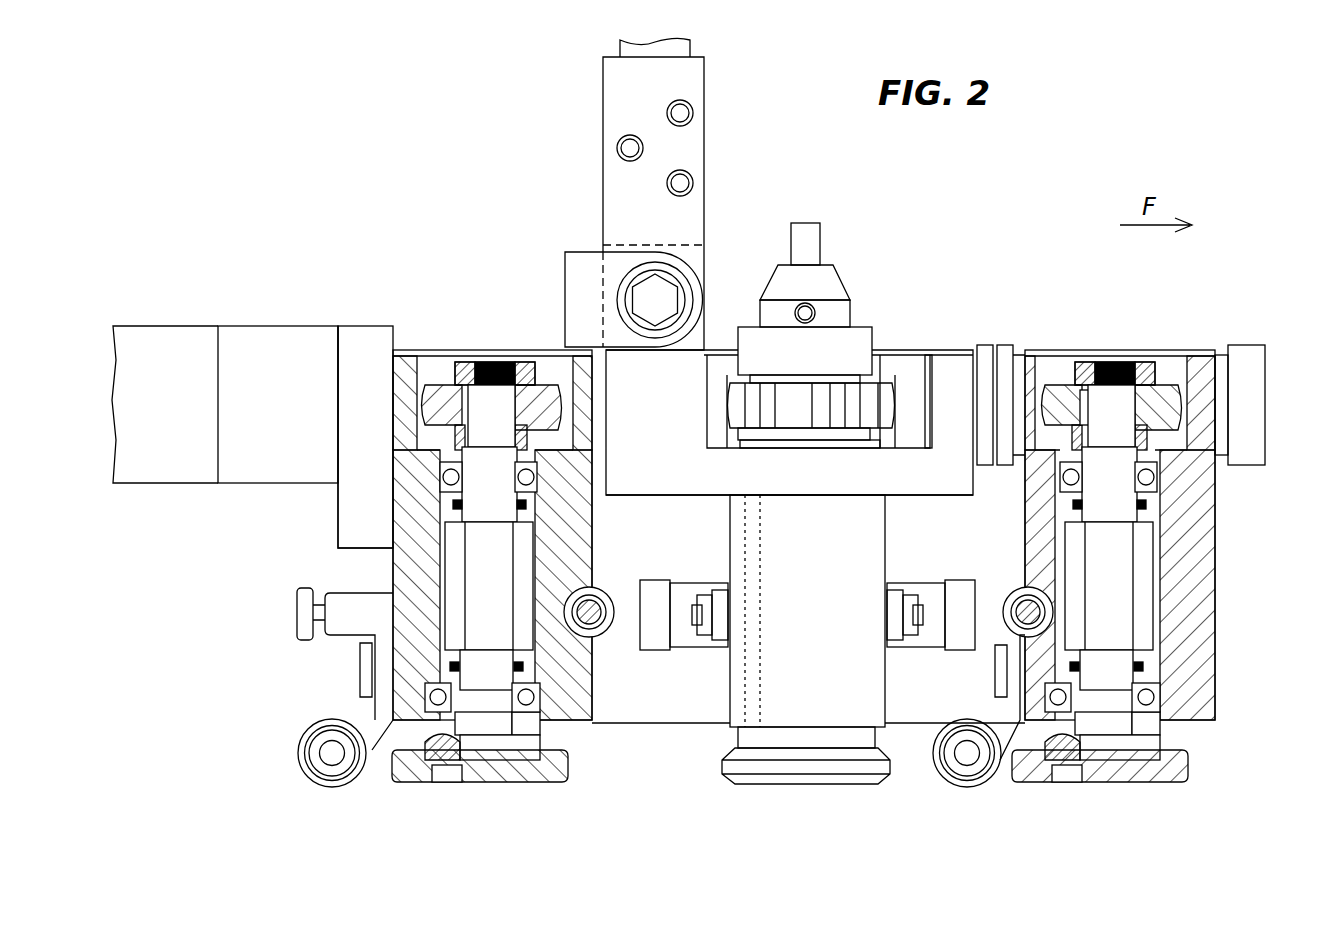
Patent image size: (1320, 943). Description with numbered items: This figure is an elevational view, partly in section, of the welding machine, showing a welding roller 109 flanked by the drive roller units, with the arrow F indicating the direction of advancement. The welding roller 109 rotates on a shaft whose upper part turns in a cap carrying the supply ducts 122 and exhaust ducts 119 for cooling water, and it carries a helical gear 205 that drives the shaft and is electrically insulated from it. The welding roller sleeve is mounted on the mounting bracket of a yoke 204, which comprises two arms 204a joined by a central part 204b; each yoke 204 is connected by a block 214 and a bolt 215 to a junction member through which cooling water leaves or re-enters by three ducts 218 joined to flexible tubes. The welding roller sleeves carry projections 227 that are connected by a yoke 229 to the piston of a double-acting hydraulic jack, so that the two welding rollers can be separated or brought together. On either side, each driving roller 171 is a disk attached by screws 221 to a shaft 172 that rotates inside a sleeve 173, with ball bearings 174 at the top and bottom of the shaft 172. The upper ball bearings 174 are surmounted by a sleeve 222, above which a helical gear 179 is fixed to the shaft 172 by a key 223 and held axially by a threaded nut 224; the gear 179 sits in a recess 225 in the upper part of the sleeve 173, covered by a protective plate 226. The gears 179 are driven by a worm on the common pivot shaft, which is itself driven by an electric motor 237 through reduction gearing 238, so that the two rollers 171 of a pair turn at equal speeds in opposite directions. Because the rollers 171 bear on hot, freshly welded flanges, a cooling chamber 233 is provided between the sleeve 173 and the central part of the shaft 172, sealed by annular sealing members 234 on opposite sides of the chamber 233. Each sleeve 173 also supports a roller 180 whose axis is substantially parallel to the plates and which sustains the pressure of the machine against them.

The serrated roller 109 is at (862, 772).
The exhaust duct 119 is at (865, 340).
The supply duct 122 is at (810, 237).
The driving roller 171 is at (560, 770).
The shaft 172 is at (470, 578).
The sleeve 173 is at (405, 648).
The ball bearing 174 is at (440, 475).
The helical gear 179 is at (440, 380).
The roller 180 is at (298, 752).
The yoke 204 is at (707, 478).
The arm 204a is at (932, 355).
The central part 204b is at (870, 468).
The helical gear 205 is at (890, 355).
The block 214 is at (585, 247).
The bolt 215 is at (640, 300).
The duct 218 is at (616, 150).
The screw 221 is at (1165, 768).
The sleeve 222 is at (1150, 450).
The key 223 is at (1115, 365).
The threaded nut 224 is at (480, 372).
The recess 225 is at (1175, 365).
The protective plate 226 is at (1083, 350).
The projection 227 is at (930, 620).
The yoke 229 is at (948, 600).
The chamber 233 is at (525, 547).
The annular sealing member 234 is at (455, 510).
The electric motor 237 is at (178, 330).
The reduction gearing 238 is at (298, 330).